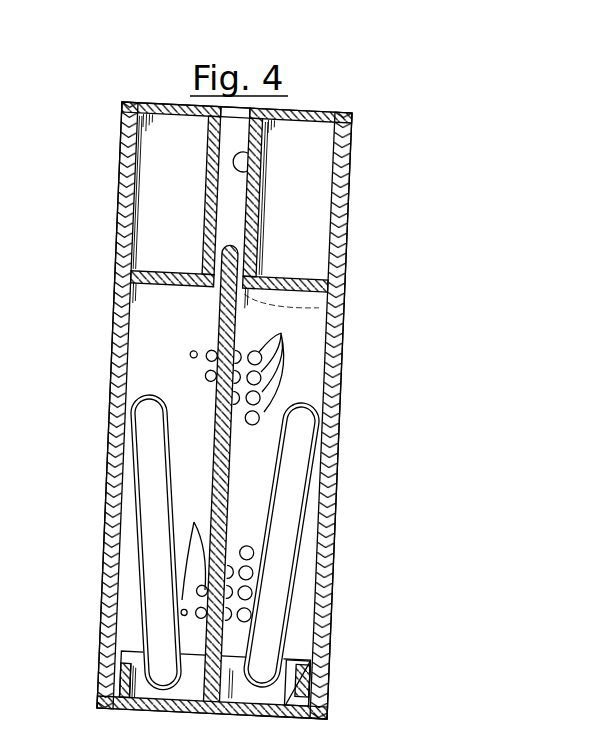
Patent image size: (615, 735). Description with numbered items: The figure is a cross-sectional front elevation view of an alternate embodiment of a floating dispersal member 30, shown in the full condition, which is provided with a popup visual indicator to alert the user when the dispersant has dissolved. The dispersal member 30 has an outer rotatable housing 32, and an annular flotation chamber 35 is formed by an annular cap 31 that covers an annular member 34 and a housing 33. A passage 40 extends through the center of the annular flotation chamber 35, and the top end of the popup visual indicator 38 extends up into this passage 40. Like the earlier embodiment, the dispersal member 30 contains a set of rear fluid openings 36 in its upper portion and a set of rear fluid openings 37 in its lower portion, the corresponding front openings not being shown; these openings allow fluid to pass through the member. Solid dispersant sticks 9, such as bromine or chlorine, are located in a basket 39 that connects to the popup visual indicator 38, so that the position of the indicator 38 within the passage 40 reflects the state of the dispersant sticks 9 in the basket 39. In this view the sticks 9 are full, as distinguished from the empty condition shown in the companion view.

The floating dispersal member 30 is at (101, 472).
The annular cap 31 is at (120, 121).
The outer rotatable housing 32 is at (117, 228).
The housing 33 is at (141, 167).
The annular member 34 is at (145, 268).
The annular flotation chamber 35 is at (193, 197).
The rear fluid openings 36 is at (237, 368).
The rear fluid openings 37 is at (240, 552).
The popup visual indicator 38 is at (230, 500).
The basket 39 is at (328, 651).
The passage 40 is at (263, 143).
The solid dispersant sticks 9 is at (135, 394).